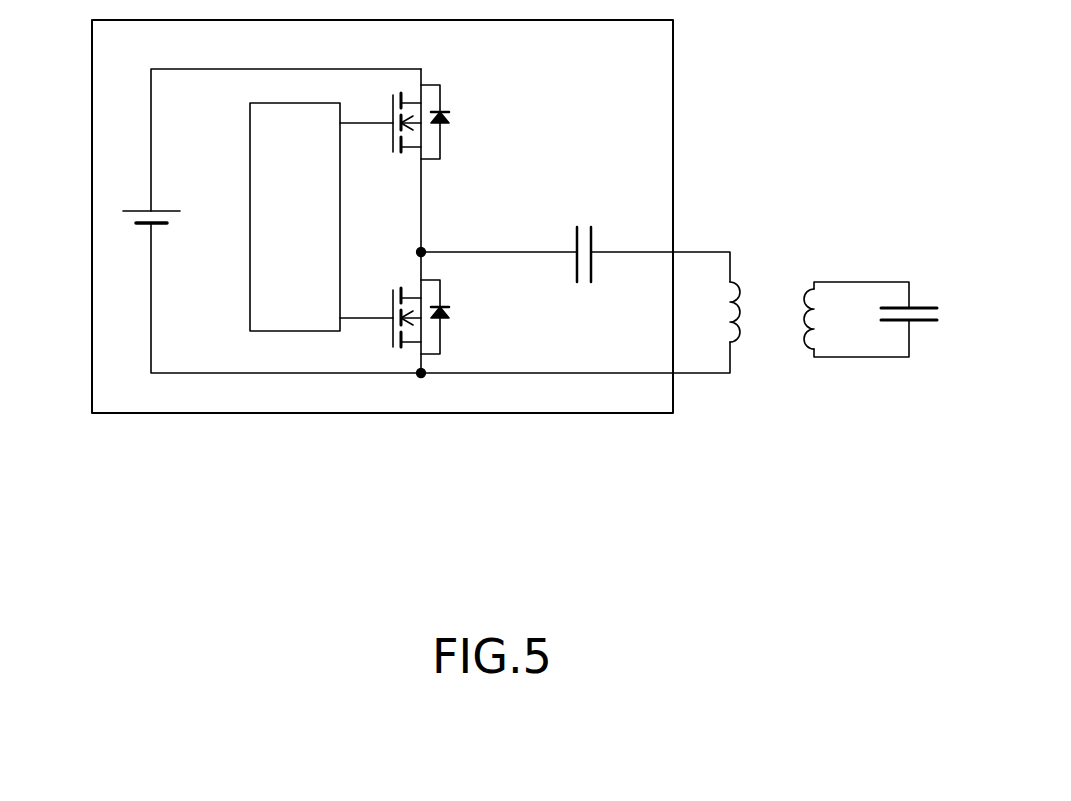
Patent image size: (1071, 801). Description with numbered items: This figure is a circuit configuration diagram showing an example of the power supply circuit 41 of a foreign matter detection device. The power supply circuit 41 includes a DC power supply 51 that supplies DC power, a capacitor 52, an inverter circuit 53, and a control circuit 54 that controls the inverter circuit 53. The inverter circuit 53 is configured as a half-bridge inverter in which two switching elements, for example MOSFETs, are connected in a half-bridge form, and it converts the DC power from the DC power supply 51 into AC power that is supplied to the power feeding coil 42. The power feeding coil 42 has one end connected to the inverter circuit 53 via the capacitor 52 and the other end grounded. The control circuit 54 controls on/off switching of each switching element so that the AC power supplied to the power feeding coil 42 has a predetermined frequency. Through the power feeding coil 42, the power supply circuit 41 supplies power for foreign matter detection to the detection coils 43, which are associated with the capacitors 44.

The power supply circuit 41 is at (655, 433).
The power feeding coil 42 is at (752, 332).
The detection coils 43 is at (792, 300).
The capacitors 44 is at (924, 327).
The DC power supply 51 is at (125, 218).
The capacitor 52 is at (582, 222).
The inverter circuit 53 is at (456, 420).
The control circuit 54 is at (293, 331).